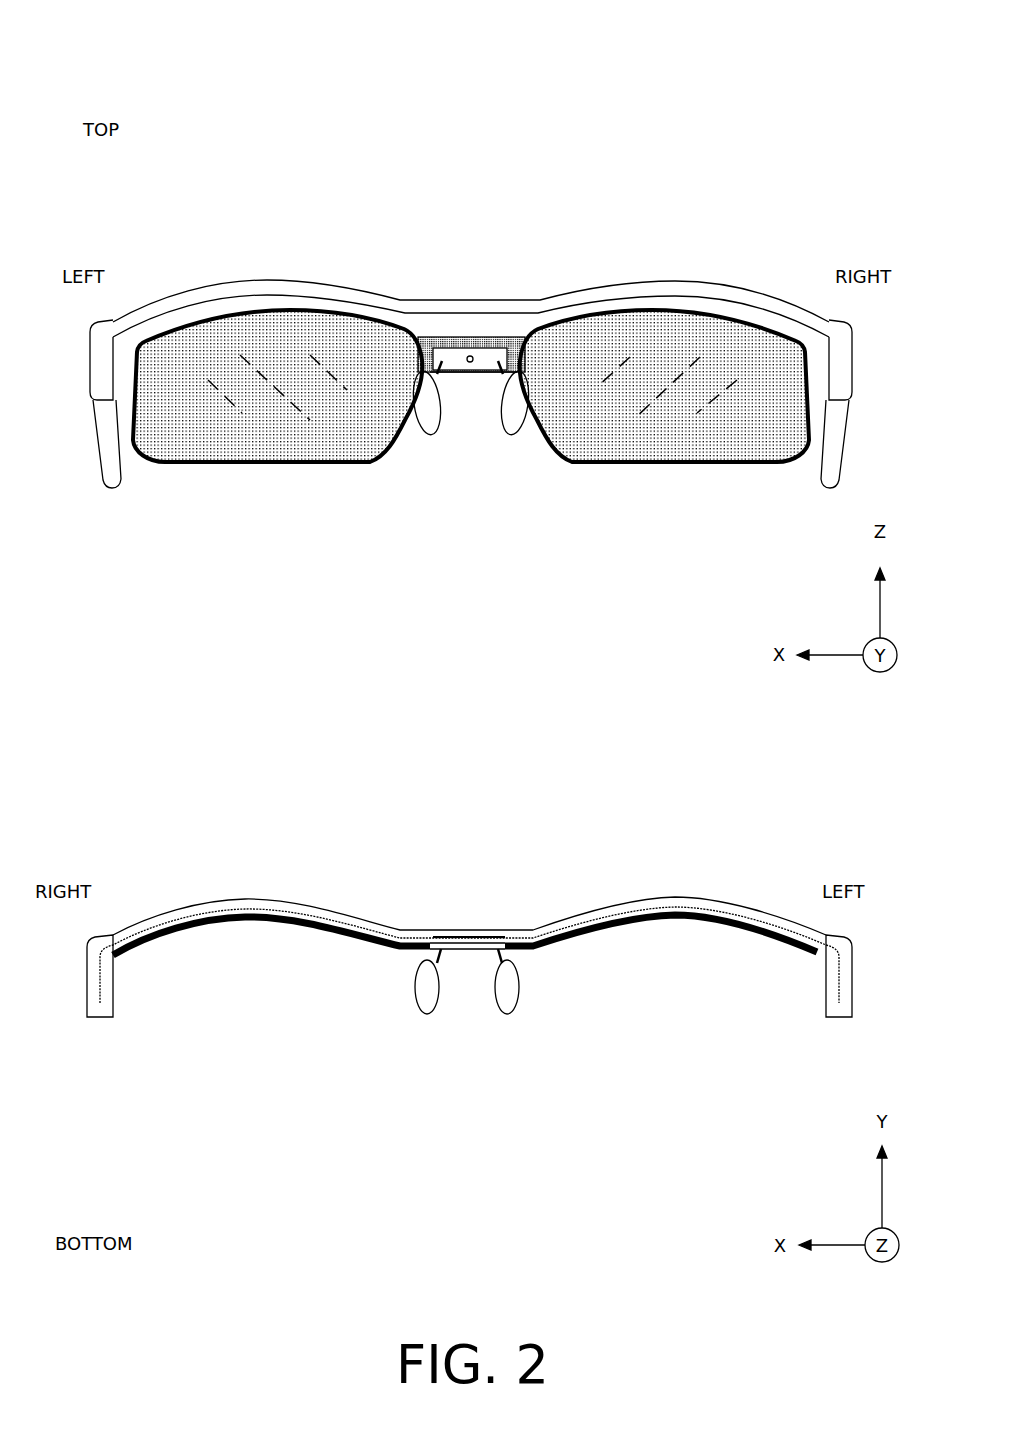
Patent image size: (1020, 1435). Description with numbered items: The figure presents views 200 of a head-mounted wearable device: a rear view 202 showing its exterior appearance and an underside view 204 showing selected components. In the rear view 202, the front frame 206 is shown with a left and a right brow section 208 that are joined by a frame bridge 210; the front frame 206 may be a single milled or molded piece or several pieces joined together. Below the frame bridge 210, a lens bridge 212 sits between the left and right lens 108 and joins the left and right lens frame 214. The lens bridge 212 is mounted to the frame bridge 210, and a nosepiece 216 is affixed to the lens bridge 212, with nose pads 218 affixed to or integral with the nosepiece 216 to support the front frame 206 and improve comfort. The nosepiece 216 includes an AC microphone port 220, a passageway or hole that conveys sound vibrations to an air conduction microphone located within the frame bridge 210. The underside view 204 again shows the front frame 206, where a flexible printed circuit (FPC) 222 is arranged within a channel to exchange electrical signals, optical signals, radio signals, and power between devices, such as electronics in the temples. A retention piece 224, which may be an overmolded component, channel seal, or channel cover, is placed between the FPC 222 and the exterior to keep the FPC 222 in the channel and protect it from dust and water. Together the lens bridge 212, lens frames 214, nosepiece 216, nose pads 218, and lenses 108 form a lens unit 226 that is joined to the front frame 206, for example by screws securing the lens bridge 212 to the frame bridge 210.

The views 200 is at (752, 52).
The rear view 202 is at (212, 84).
The underside view 204 is at (255, 808).
The front frame 206 is at (212, 898).
The brow section 208 is at (850, 180).
The frame bridge 210 is at (535, 218).
The lens bridge 212 is at (487, 373).
The lens frame 214 is at (663, 463).
The nosepiece 216 is at (470, 376).
The nose pad 218 is at (352, 1076).
The AC microphone port 220 is at (471, 356).
The flexible printed circuit (FPC) 222 is at (505, 936).
The retention piece 224 is at (271, 895).
The lens unit 226 is at (801, 951).
The lens 108 is at (668, 422).